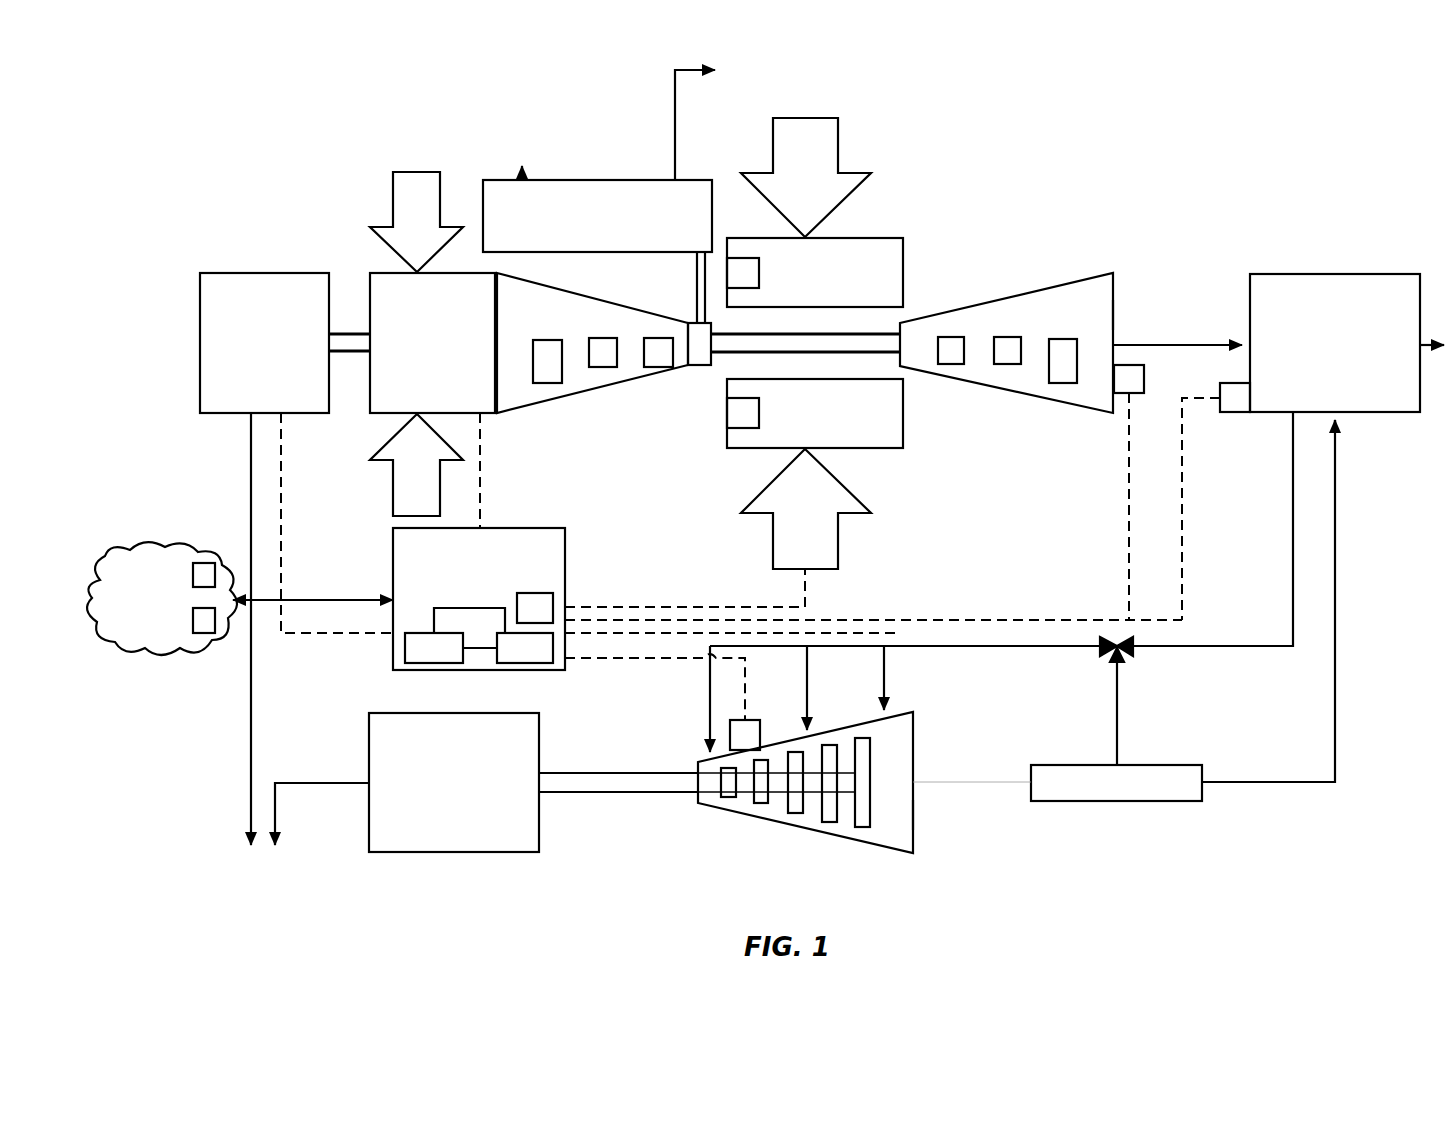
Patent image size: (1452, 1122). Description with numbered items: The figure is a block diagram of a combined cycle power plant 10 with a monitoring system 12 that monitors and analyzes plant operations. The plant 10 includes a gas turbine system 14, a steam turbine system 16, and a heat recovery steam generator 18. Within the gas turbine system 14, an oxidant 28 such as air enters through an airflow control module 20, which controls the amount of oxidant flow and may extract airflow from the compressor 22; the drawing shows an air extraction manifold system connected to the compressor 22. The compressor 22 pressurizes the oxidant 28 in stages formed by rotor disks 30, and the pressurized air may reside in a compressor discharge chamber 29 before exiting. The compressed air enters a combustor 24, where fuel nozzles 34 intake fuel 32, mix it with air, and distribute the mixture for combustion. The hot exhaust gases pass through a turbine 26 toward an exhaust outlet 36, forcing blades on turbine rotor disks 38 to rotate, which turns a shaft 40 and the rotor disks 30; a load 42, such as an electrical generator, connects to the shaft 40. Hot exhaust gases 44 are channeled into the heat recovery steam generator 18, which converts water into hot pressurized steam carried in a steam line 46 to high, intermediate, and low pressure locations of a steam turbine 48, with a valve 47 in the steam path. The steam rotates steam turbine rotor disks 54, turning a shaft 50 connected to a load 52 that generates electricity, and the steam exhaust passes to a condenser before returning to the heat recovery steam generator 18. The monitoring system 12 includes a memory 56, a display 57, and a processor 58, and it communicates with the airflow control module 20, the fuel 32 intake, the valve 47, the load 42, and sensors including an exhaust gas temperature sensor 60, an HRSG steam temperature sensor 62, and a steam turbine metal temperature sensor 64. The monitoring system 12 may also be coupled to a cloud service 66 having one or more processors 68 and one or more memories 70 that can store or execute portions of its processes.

The combined cycle power plant 10 is at (1170, 190).
The monitoring system 12 is at (540, 528).
The gas turbine system 14 is at (470, 204).
The steam turbine system 16 is at (950, 814).
The heat recovery steam generator 18 is at (1335, 274).
The airflow control module 20 is at (382, 273).
The compressor 22 is at (508, 413).
The combustor 24 is at (880, 238).
The turbine 26 is at (1030, 292).
The oxidant 28 is at (405, 172).
The compressor discharge chamber 29 is at (698, 358).
The rotor disks 30 is at (548, 383).
The fuel 32 is at (773, 145).
The fuel nozzles 34 is at (745, 258).
The exhaust outlet 36 is at (1113, 305).
The turbine rotor disks 38 is at (951, 364).
The shaft 40 is at (352, 351).
The load 42 is at (268, 273).
The hot exhaust gases 44 is at (1183, 345).
The steam line 46 is at (995, 646).
The valve 47 is at (1130, 650).
The steam turbine 48 is at (860, 722).
The shaft 50 is at (615, 773).
The load 52 is at (455, 852).
The steam turbine rotor disks 54 is at (728, 797).
The memory 56 is at (428, 663).
The display 57 is at (535, 593).
The processor 58 is at (525, 663).
The exhaust gas temperature sensor 60 is at (1144, 380).
The HRSG steam temperature sensor 62 is at (1235, 412).
The steam turbine metal temperature sensor 64 is at (760, 735).
The cloud service 66 is at (168, 548).
The processors 68 is at (205, 563).
The memories 70 is at (205, 633).